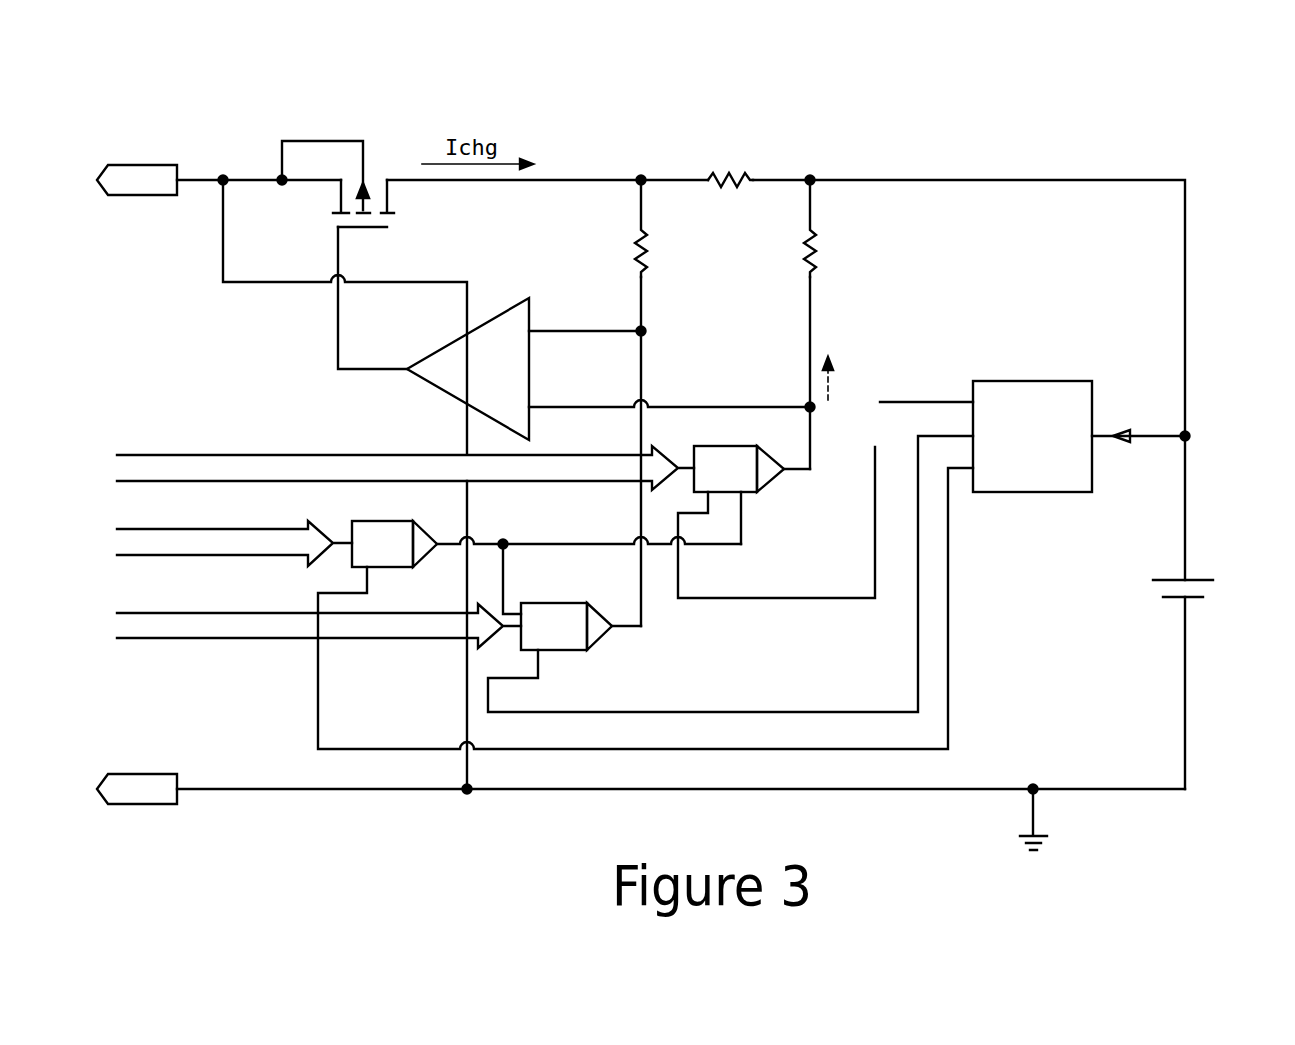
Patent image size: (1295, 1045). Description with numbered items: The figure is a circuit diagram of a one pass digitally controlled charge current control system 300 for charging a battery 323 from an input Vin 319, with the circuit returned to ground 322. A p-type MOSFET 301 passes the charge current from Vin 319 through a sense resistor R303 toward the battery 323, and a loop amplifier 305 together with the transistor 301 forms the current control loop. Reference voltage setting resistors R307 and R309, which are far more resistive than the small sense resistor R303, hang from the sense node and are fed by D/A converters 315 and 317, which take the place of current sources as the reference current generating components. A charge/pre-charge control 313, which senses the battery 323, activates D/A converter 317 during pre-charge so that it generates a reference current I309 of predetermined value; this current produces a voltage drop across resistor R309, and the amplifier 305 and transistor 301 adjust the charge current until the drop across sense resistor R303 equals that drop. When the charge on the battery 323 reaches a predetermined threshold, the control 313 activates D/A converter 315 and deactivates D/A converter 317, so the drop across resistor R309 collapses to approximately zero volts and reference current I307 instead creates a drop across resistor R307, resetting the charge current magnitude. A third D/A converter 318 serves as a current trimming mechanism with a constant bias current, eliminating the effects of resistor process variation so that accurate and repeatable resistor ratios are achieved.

The one pass digitally controlled charge current control system 300 is at (632, 57).
The p-type MOSFET 301 is at (310, 141).
The loop amplifier 305 is at (443, 393).
The sense resistor R303 is at (725, 172).
The resistor R307 is at (635, 258).
The resistor R309 is at (820, 262).
The reference current I307 is at (640, 522).
The reference current I309 is at (844, 377).
The charge/pre-charge control 313 is at (1055, 494).
The D/A converter 315 is at (565, 652).
The D/A converter 317 is at (752, 495).
The D/A converter 318 is at (390, 570).
The Vin 319 is at (157, 165).
The ground 322 is at (150, 805).
The battery 323 is at (1197, 578).